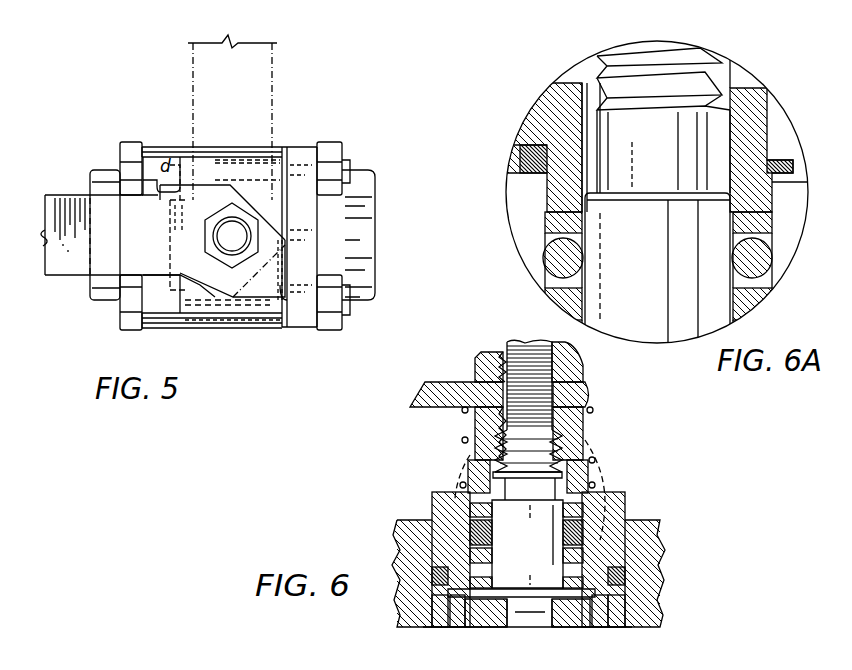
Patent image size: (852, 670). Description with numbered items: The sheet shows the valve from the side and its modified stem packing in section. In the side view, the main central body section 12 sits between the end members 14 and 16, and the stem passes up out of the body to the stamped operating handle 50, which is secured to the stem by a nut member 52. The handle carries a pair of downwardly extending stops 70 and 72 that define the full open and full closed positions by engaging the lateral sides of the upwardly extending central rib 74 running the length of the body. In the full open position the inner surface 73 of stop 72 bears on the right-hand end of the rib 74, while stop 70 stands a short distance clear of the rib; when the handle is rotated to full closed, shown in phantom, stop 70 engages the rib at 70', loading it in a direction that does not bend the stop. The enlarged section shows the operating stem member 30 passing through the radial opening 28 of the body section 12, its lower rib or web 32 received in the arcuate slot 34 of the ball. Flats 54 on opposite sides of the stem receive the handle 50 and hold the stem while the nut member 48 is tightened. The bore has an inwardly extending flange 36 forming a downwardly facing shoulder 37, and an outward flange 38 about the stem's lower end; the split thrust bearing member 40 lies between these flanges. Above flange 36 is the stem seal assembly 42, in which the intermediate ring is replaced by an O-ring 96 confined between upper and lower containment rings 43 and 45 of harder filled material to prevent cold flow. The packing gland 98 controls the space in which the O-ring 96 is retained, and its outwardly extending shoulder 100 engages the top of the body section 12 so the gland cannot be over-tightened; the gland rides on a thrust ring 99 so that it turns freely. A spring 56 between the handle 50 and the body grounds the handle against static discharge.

In FIG. 5, the main central body section 12 is at (208, 338).
In FIG. 5, the end member 14 is at (118, 328).
In FIG. 5, the end member 16 is at (303, 334).
In FIG. 5, the operating handle 50 is at (58, 278).
In FIG. 6, the operating handle 50 is at (585, 397).
In FIG. 5, the nut member 52 is at (203, 231).
In FIG. 6, the nut member 52 is at (563, 342).
In FIG. 5, the stop 70 is at (216, 168).
In FIG. 5, the stop member in engaged position 70' is at (259, 200).
In FIG. 5, the stop 72 is at (285, 293).
In FIG. 5, the inner surface 73 is at (283, 245).
In FIG. 5, the central rib 74 is at (180, 303).
In FIG. 6, the flats 54 is at (503, 350).
In FIG. 6A, the nut member 48 is at (577, 58).
In FIG. 6, the nut member 48 is at (475, 430).
In FIG. 6, the spring 56 is at (462, 441).
In FIG. 6, the packing gland 98 is at (573, 467).
In FIG. 6A, the thrust ring 99 is at (527, 173).
In FIG. 6, the thrust ring 99 is at (587, 477).
In FIG. 6A, the shoulder 100 is at (532, 150).
In FIG. 6, the shoulder 100 is at (452, 493).
In FIG. 6, the stem seal assembly 42 is at (410, 458).
In FIG. 6, the opening 28 is at (594, 490).
In FIG. 6, the flange 36 is at (433, 590).
In FIG. 6A, the ring member 43 is at (578, 218).
In FIG. 6, the ring member 43 is at (493, 515).
In FIG. 6, the O-ring 96 is at (493, 538).
In FIG. 6, the ring member 45 is at (493, 565).
In FIG. 6, the thrust bearing member 40 is at (562, 580).
In FIG. 6, the operating stem member 30 is at (495, 600).
In FIG. 6, the rib or web 32 is at (520, 612).
In FIG. 6, the arcuate slot 34 is at (548, 612).
In FIG. 6, the shoulder 37 is at (477, 602).
In FIG. 6, the flange 38 is at (575, 605).